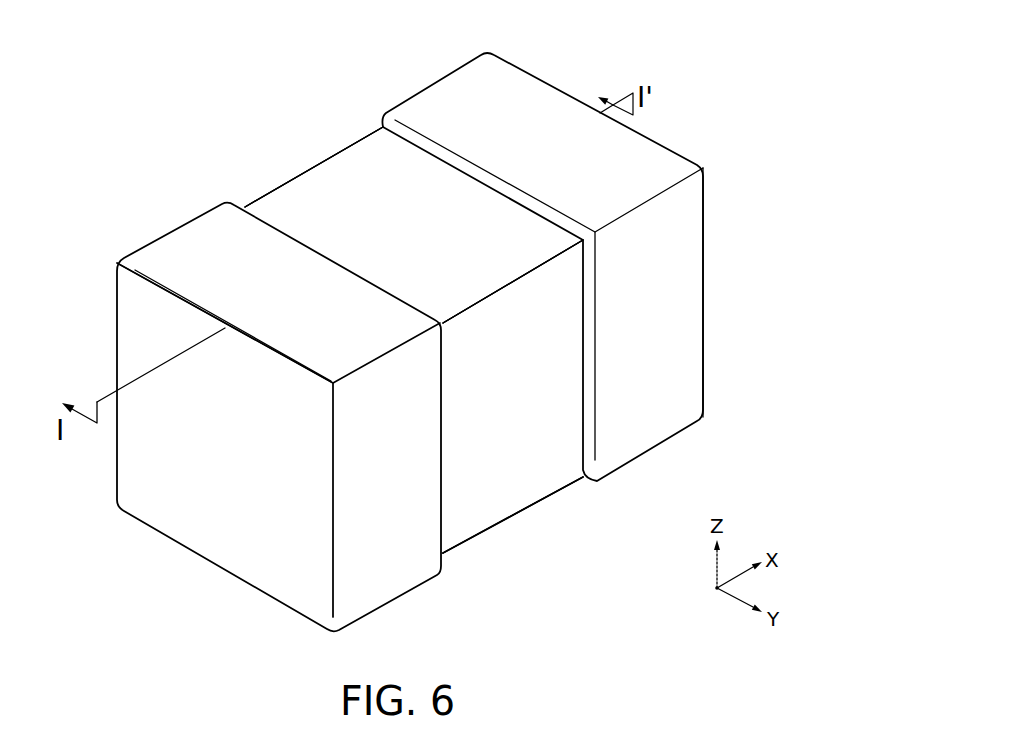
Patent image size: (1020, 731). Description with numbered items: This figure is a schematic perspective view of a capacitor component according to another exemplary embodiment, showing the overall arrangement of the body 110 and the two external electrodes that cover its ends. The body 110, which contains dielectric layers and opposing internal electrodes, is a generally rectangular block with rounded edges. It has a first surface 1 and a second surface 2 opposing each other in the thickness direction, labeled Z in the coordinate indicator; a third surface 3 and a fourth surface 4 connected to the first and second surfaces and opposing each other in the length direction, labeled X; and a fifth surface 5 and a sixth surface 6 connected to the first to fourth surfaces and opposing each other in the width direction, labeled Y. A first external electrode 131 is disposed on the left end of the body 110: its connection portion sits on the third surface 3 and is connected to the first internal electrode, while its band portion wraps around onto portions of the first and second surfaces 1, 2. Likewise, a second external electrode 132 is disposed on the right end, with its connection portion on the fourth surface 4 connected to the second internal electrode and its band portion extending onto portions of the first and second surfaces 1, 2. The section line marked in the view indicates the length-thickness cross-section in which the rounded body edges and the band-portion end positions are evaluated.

The body 110 is at (363, 153).
The first external electrode 131 is at (187, 230).
The second external electrode 132 is at (443, 87).
The first surface 1 is at (497, 532).
The second surface 2 is at (333, 188).
The third surface 3 is at (156, 465).
The fourth surface 4 is at (665, 161).
The fifth surface 5 is at (530, 472).
The sixth surface 6 is at (266, 189).